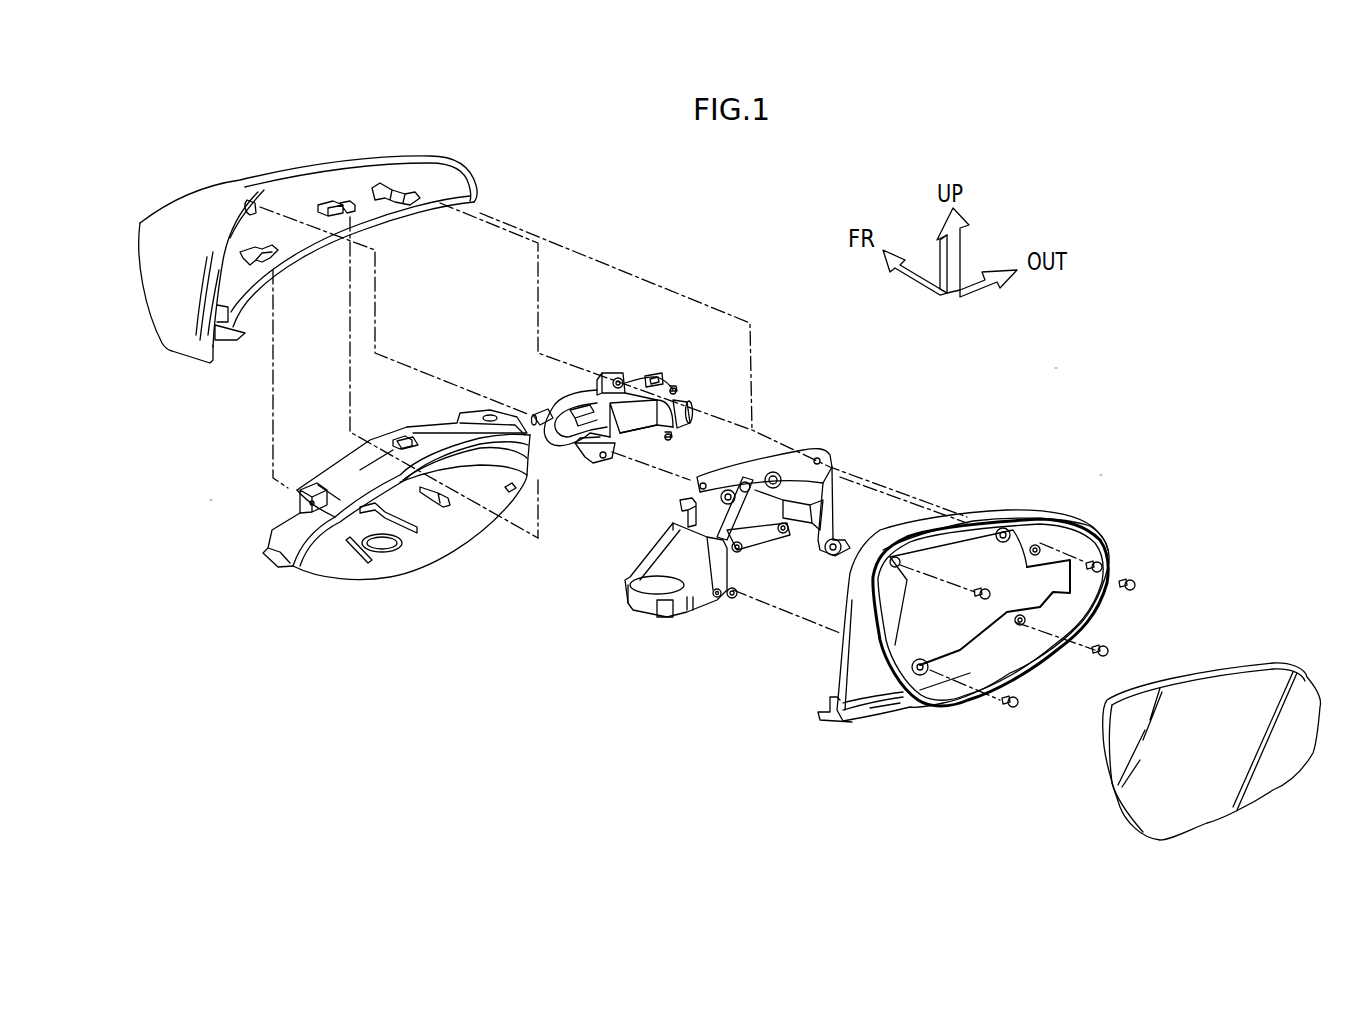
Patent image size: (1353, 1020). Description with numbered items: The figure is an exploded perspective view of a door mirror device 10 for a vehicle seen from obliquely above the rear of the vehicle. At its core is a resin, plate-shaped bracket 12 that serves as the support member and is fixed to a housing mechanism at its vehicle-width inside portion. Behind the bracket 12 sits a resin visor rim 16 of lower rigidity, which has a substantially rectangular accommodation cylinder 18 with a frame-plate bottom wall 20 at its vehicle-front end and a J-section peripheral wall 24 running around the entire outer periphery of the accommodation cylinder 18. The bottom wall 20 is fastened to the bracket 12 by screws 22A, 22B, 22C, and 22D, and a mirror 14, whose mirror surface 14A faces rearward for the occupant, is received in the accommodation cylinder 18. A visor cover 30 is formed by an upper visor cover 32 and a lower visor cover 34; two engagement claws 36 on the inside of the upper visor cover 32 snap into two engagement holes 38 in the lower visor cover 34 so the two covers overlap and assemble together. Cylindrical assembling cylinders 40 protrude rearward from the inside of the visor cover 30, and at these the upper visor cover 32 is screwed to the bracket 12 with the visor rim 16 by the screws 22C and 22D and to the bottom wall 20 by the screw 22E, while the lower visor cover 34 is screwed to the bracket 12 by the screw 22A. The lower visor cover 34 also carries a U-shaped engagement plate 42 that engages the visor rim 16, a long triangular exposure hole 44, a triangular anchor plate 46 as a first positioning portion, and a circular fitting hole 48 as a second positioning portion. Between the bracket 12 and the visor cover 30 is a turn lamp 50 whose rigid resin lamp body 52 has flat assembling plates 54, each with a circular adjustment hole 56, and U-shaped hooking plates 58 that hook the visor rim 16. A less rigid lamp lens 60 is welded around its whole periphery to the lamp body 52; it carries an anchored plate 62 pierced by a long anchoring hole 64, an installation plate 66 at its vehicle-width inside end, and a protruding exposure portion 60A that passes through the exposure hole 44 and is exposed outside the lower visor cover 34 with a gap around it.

The door mirror device 10 is at (1067, 362).
The bracket 12 is at (637, 620).
The mirror 14 is at (1193, 668).
The mirror surface 14A is at (1130, 812).
The visor rim 16 is at (1112, 469).
The accommodation cylinder 18 is at (1017, 657).
The bottom wall 20 is at (1033, 533).
The screw 22A is at (1100, 647).
The screw 22B is at (1007, 705).
The screw 22C is at (980, 588).
The screw 22D is at (1092, 557).
The screw 22E is at (1123, 577).
The peripheral wall 24 is at (1007, 518).
The visor cover 30 is at (204, 469).
The upper visor cover 32 is at (182, 357).
The lower visor cover 34 is at (350, 578).
The engagement claws 36 is at (330, 200).
The engagement holes 38 is at (392, 440).
The assembling cylinders 40 is at (248, 212).
The engagement plate 42 is at (522, 420).
The exposure hole 44 is at (485, 460).
The anchor plate 46 is at (485, 413).
The fitting hole 48 is at (405, 440).
The turn lamp 50 is at (596, 357).
The lamp body 52 is at (713, 425).
The assembling plates 54 is at (612, 375).
The adjustment hole 56 is at (625, 377).
The hooking plates 58 is at (674, 389).
The lamp lens 60 is at (672, 430).
The exposure portion 60A is at (686, 402).
The anchored plate 62 is at (650, 376).
The anchoring hole 64 is at (657, 379).
The installation plate 66 is at (547, 417).